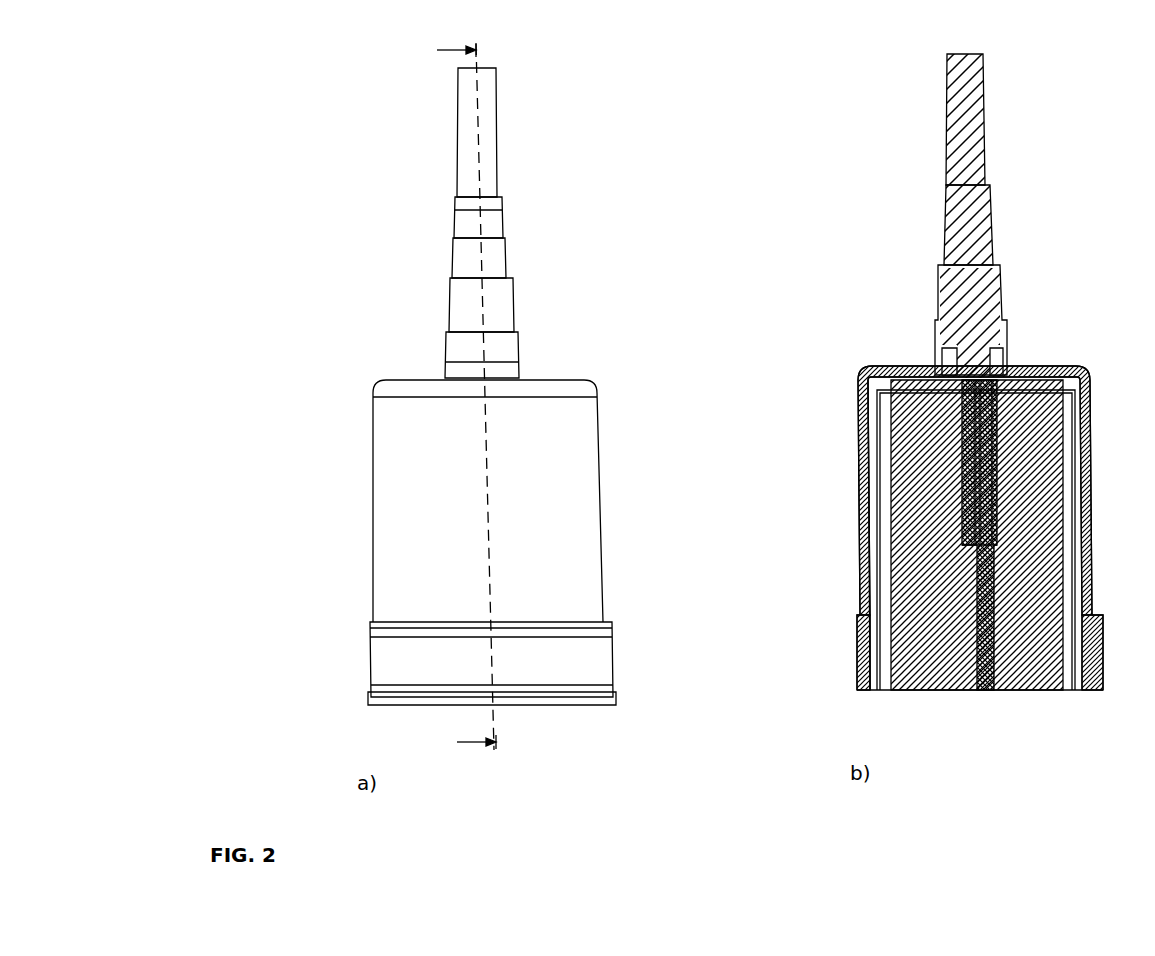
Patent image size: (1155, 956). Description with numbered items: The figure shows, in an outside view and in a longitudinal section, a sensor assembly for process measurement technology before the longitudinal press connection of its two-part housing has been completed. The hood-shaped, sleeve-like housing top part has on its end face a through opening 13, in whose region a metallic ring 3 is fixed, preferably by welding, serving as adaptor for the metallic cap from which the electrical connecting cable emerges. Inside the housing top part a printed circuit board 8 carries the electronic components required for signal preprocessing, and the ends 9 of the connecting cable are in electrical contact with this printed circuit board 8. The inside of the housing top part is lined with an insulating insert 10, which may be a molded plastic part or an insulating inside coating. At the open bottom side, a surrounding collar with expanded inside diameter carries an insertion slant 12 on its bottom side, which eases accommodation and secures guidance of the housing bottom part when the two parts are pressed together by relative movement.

The metallic ring 3 is at (519, 373).
The printed circuit board 8 is at (1037, 672).
The ends of the connecting cable 9 is at (973, 543).
The insulating insert 10 is at (877, 682).
The insertion slant 12 is at (1100, 687).
The through opening 13 is at (1008, 348).